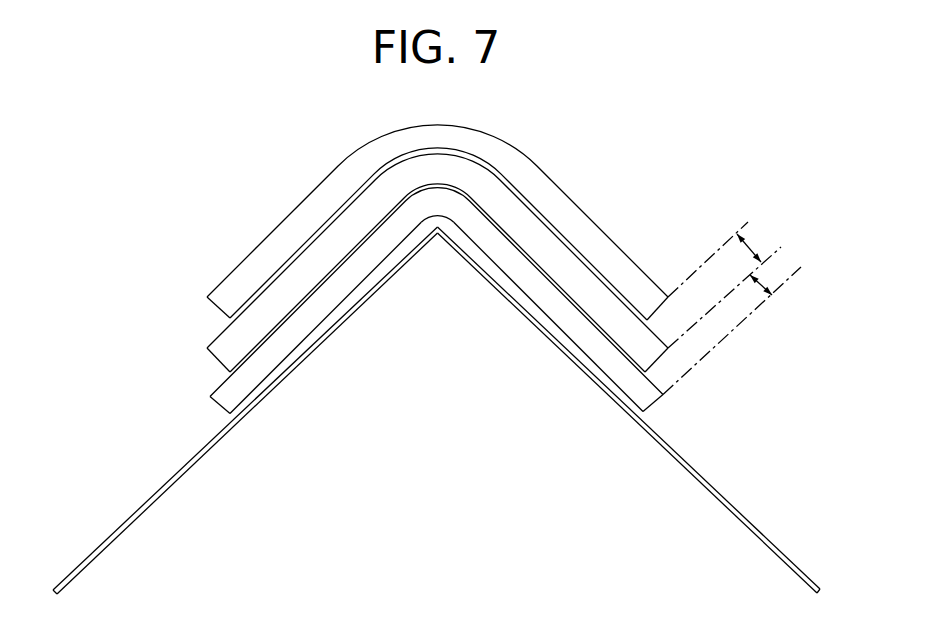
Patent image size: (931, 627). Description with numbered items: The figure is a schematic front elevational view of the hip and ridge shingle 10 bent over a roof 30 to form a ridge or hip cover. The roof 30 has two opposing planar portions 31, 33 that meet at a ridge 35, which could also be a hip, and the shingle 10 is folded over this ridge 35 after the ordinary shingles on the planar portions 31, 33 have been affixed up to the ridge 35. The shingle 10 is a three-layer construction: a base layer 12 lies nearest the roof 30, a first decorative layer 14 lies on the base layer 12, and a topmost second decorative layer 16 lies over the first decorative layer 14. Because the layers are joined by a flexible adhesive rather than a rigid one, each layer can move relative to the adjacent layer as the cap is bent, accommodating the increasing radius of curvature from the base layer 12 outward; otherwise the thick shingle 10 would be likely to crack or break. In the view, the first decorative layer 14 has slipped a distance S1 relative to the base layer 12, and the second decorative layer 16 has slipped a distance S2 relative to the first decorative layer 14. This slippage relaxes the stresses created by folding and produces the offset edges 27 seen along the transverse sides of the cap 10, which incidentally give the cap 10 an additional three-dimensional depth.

The hip and ridge shingle 10 is at (258, 193).
The base layer 12 is at (653, 403).
The first decorative layer 14 is at (220, 358).
The second decorative layer 16 is at (583, 228).
The offset edges 27 is at (172, 335).
The roof 30 is at (142, 483).
The planar portion of the roof 31 is at (125, 524).
The planar portion of the roof 33 is at (702, 488).
The ridge 35 is at (437, 234).
The distance S1 is at (775, 280).
The distance S2 is at (750, 244).